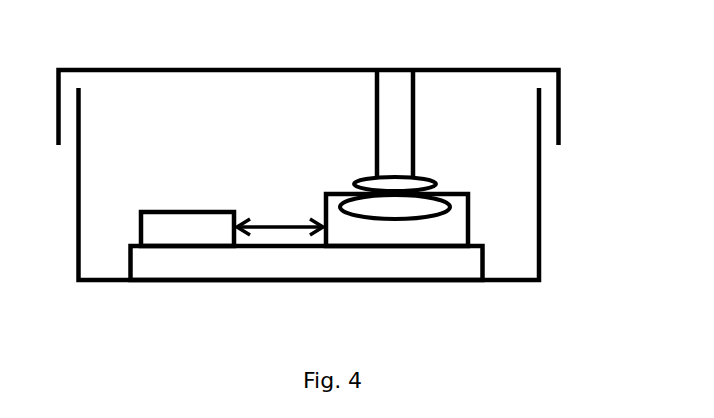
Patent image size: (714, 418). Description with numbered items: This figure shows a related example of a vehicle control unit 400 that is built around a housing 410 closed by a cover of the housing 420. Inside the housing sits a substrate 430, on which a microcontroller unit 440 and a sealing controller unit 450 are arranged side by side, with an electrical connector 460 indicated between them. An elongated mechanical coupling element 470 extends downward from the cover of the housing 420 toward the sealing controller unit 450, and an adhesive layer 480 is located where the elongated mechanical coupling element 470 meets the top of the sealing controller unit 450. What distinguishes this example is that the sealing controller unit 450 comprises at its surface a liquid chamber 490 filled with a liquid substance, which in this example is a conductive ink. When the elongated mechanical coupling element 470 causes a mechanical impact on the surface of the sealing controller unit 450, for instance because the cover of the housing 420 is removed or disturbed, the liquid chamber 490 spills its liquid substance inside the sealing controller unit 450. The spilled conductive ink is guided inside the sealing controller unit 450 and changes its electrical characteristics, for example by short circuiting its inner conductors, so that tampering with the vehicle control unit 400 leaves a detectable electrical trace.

The vehicle control unit 400 is at (488, 34).
The housing 410 is at (539, 282).
The cover of the housing 420 is at (148, 68).
The substrate 430 is at (130, 245).
The microcontroller unit 440 is at (195, 210).
The sealing controller unit 450 is at (469, 223).
The electrical connector 460 is at (280, 222).
The elongated mechanical coupling element 470 is at (376, 117).
The adhesive layer 480 is at (433, 178).
The liquid chamber 490 is at (347, 203).